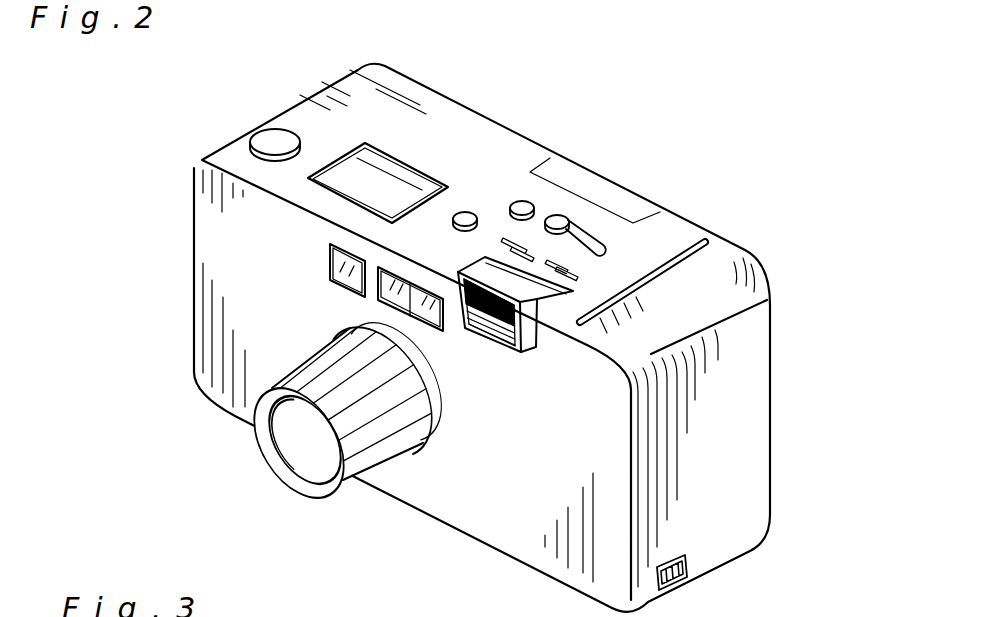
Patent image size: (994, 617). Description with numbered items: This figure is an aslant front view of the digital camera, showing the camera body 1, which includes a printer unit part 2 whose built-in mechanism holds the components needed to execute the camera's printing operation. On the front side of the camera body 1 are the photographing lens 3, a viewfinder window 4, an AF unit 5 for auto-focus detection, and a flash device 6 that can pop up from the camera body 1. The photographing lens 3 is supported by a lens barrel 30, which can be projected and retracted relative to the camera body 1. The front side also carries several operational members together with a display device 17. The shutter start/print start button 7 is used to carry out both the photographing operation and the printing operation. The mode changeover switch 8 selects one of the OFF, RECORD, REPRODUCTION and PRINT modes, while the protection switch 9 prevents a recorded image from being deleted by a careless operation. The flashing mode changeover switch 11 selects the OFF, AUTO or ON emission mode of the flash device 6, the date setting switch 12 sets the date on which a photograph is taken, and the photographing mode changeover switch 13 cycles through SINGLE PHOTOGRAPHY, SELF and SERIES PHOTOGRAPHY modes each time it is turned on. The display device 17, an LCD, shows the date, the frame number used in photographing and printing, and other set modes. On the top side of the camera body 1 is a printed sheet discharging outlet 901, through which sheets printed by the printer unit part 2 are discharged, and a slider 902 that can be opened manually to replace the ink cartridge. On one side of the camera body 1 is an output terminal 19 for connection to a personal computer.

The camera body 1 is at (545, 140).
The printer unit part 2 is at (733, 530).
The photographing lens 3 is at (312, 466).
The lens barrel 30 is at (373, 443).
The viewfinder window 4 is at (328, 262).
The AF unit 5 is at (420, 320).
The flash device 6 is at (500, 346).
The shutter start/print start button 7 is at (250, 150).
The mode changeover switch 8 is at (575, 210).
The protection switch 9 is at (530, 203).
The flashing mode changeover switch 11 is at (463, 208).
The date setting switch 12 is at (503, 245).
The photographing mode changeover switch 13 is at (578, 266).
The display device 17 is at (400, 157).
The output terminal for PC 19 is at (677, 587).
The printed sheet discharging outlet 901 is at (693, 247).
The slider 902 is at (603, 190).